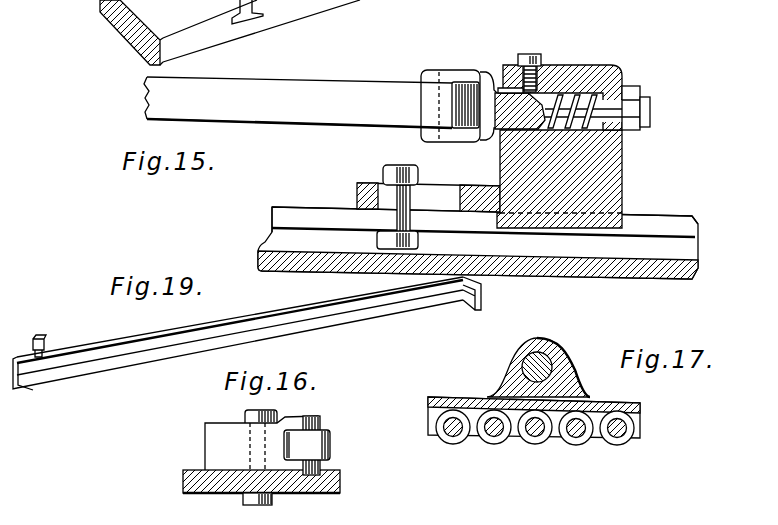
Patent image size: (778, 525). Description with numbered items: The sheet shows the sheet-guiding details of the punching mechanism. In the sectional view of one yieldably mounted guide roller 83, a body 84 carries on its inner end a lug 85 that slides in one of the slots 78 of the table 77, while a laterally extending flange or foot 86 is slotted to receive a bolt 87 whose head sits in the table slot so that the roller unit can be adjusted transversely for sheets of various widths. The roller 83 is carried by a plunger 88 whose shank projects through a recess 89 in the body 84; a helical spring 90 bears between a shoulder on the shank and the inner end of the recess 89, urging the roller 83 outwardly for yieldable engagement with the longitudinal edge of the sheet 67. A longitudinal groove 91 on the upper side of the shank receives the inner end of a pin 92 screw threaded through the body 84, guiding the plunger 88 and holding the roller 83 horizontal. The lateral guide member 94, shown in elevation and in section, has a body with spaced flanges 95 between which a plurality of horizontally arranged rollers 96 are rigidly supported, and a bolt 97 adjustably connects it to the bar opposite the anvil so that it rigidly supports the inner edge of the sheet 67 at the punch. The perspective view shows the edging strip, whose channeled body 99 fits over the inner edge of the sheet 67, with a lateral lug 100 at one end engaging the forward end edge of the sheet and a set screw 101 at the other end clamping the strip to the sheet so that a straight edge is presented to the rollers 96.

In FIG. 15, the sheet 67 is at (288, 96).
In FIG. 15, the table 77 is at (673, 227).
In FIG. 15, the slots 78 is at (607, 243).
In FIG. 15, the guide rollers 83 is at (427, 100).
In FIG. 15, the body 84 is at (617, 180).
In FIG. 15, the lug 85 is at (627, 228).
In FIG. 15, the flange or foot 86 is at (478, 183).
In FIG. 15, the bolt 87 is at (383, 168).
In FIG. 15, the plunger 88 is at (490, 93).
In FIG. 15, the recess 89 is at (603, 69).
In FIG. 15, the helical spring 90 is at (560, 69).
In FIG. 15, the groove 91 is at (513, 90).
In FIG. 15, the pin 92 is at (538, 58).
In FIG. 16, the pin 92 is at (338, 492).
In FIG. 17, the lateral guide member 94 is at (567, 371).
In FIG. 16, the flanges 95 is at (317, 420).
In FIG. 17, the flanges 95 is at (638, 440).
In FIG. 16, the rollers 96 is at (332, 442).
In FIG. 17, the rollers 96 is at (537, 438).
In FIG. 16, the bolt 97 is at (272, 502).
In FIG. 17, the bolt 97 is at (510, 358).
In FIG. 19, the channeled body 99 is at (365, 297).
In FIG. 19, the lateral lug 100 is at (485, 290).
In FIG. 19, the set screw 101 is at (37, 338).